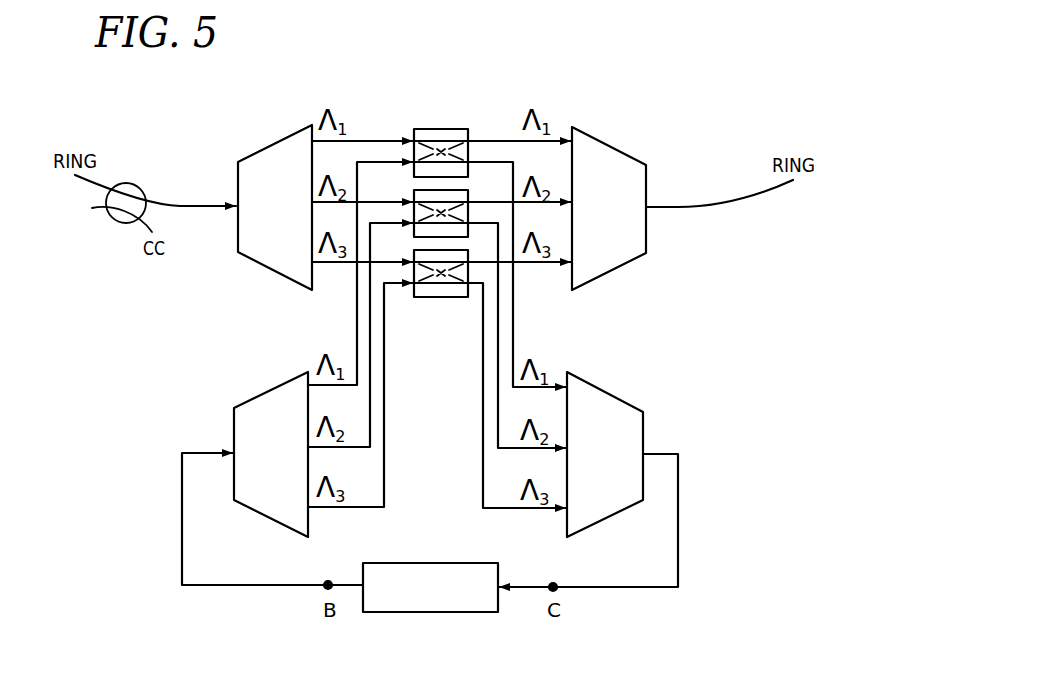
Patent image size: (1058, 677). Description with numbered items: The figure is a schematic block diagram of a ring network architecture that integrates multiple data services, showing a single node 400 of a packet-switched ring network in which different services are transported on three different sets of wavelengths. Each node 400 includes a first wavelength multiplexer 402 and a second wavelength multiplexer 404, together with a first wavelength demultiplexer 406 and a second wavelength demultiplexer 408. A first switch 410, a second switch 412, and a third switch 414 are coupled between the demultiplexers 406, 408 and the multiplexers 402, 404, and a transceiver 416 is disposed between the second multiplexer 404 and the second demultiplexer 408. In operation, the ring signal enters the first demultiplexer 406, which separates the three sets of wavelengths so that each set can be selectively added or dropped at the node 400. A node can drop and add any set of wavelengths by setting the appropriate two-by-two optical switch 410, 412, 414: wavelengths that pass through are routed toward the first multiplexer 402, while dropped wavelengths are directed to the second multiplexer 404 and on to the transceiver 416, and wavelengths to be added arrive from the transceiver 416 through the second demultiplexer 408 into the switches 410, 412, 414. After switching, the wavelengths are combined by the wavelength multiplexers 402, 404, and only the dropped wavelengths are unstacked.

The node 400 is at (697, 107).
The first wavelength multiplexer 402 is at (614, 143).
The second wavelength multiplexer 404 is at (609, 389).
The first wavelength demultiplexer 406 is at (270, 140).
The second wavelength demultiplexer 408 is at (268, 389).
The first switch 410 is at (443, 128).
The second switch 412 is at (413, 193).
The third switch 414 is at (438, 298).
The transceiver 416 is at (437, 562).